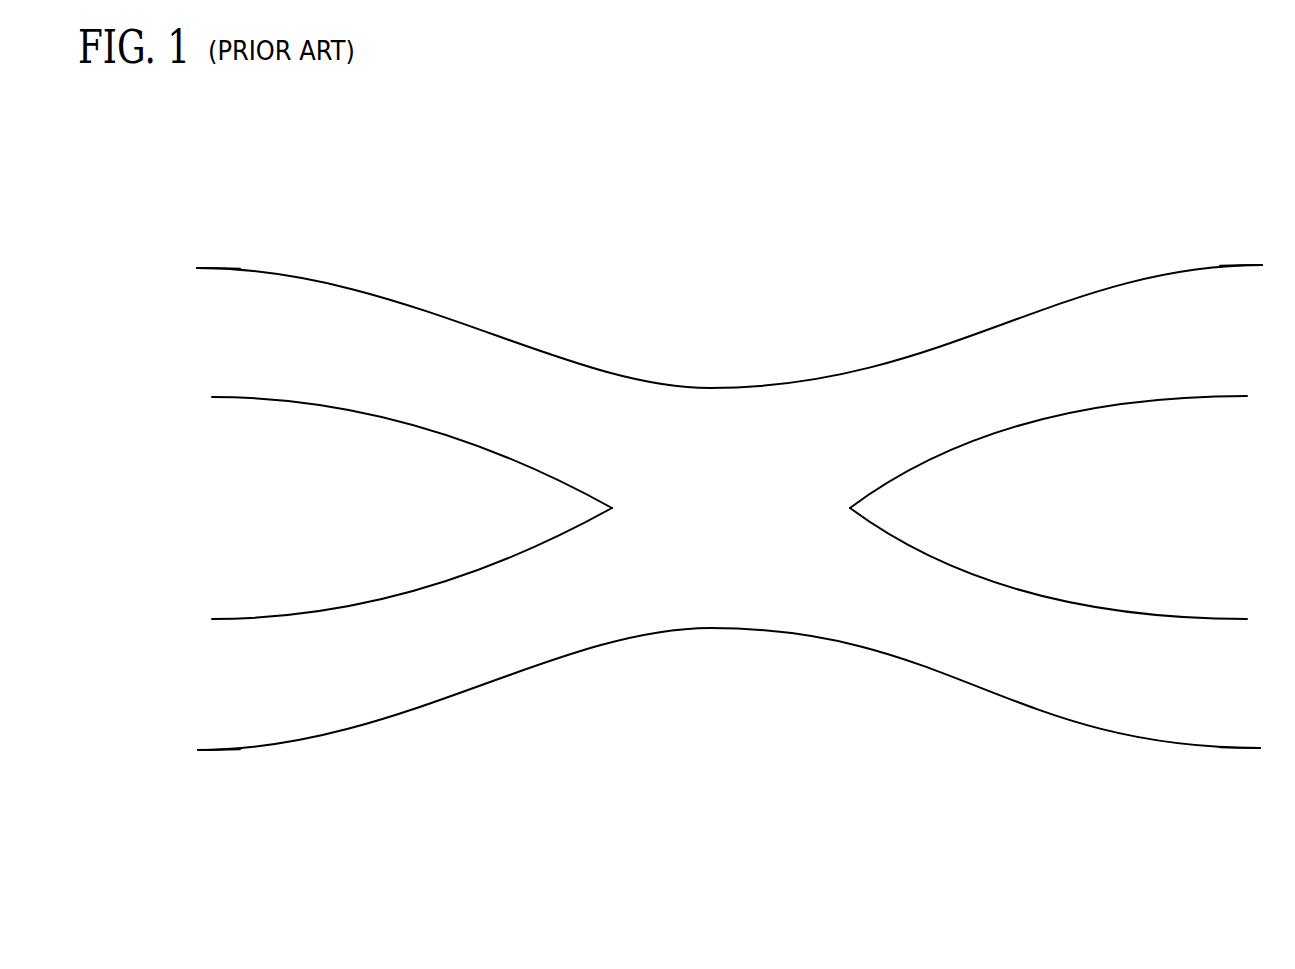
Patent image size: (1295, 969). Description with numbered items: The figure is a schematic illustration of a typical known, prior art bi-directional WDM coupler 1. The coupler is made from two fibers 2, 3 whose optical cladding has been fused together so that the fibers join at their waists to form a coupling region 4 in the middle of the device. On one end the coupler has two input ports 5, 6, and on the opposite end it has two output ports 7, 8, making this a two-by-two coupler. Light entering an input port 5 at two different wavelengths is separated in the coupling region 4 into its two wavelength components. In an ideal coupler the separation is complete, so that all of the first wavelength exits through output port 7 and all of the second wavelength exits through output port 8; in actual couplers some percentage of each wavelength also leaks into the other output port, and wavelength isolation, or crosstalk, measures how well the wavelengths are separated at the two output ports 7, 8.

The WDM coupler 1 is at (730, 532).
The fiber 2 is at (371, 439).
The fiber 3 is at (512, 692).
The coupling region 4 is at (722, 422).
The input port 5 is at (210, 328).
The input port 6 is at (210, 692).
The output port 7 is at (1252, 328).
The output port 8 is at (1252, 690).